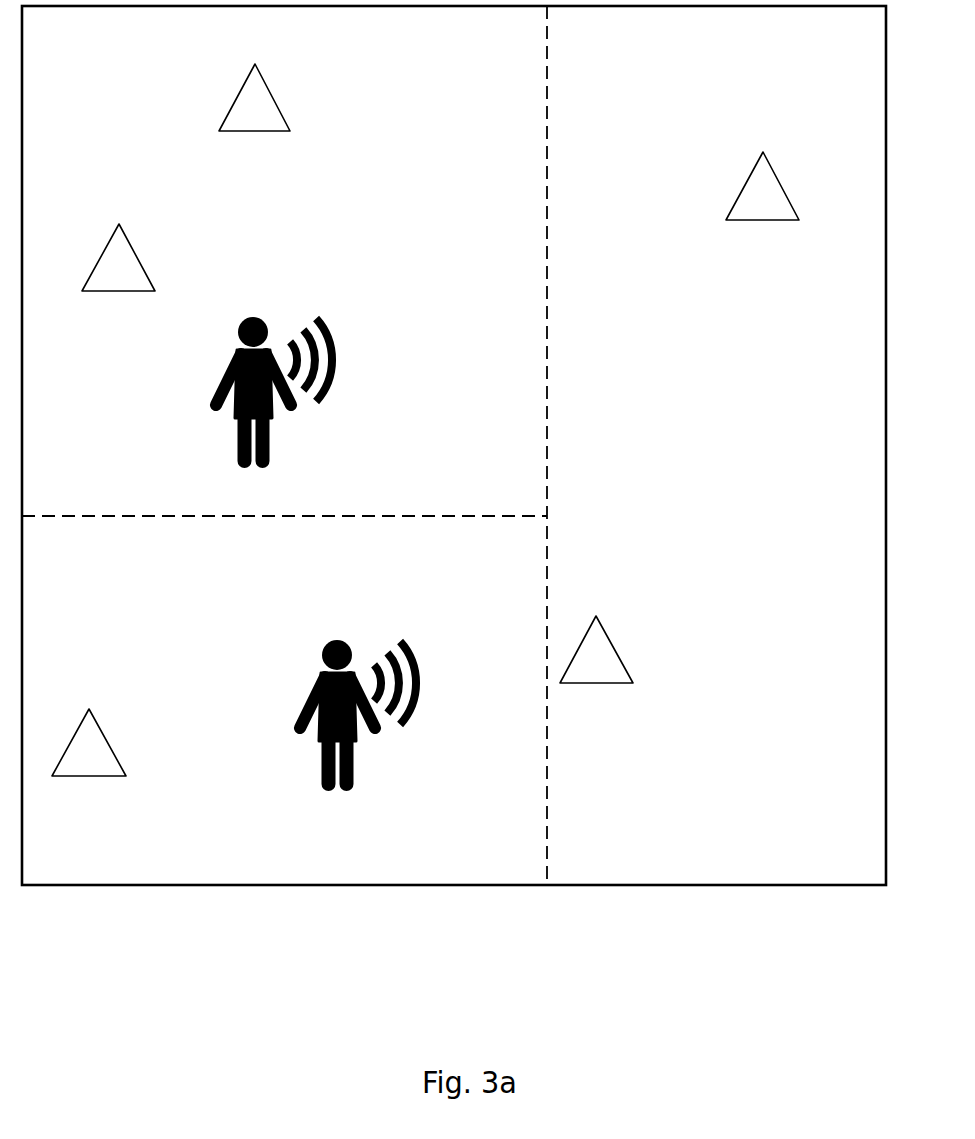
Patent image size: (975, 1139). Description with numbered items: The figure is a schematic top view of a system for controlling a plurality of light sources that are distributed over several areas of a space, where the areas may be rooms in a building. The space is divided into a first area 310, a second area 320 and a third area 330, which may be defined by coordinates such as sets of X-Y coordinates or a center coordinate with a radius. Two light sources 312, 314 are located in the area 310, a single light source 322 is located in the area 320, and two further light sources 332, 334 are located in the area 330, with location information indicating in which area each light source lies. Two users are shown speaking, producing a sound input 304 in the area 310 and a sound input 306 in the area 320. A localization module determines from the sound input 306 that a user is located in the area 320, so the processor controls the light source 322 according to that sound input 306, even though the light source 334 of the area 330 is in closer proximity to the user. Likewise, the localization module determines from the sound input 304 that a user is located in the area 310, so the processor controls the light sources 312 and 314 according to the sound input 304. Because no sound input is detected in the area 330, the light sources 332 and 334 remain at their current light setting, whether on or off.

The sound input 304 is at (312, 343).
The sound input 306 is at (397, 672).
The area 310 is at (164, 476).
The light source 312 is at (235, 100).
The light source 314 is at (135, 253).
The area 320 is at (298, 854).
The light source 322 is at (101, 741).
The area 330 is at (735, 853).
The light source 332 is at (750, 176).
The light source 334 is at (613, 666).